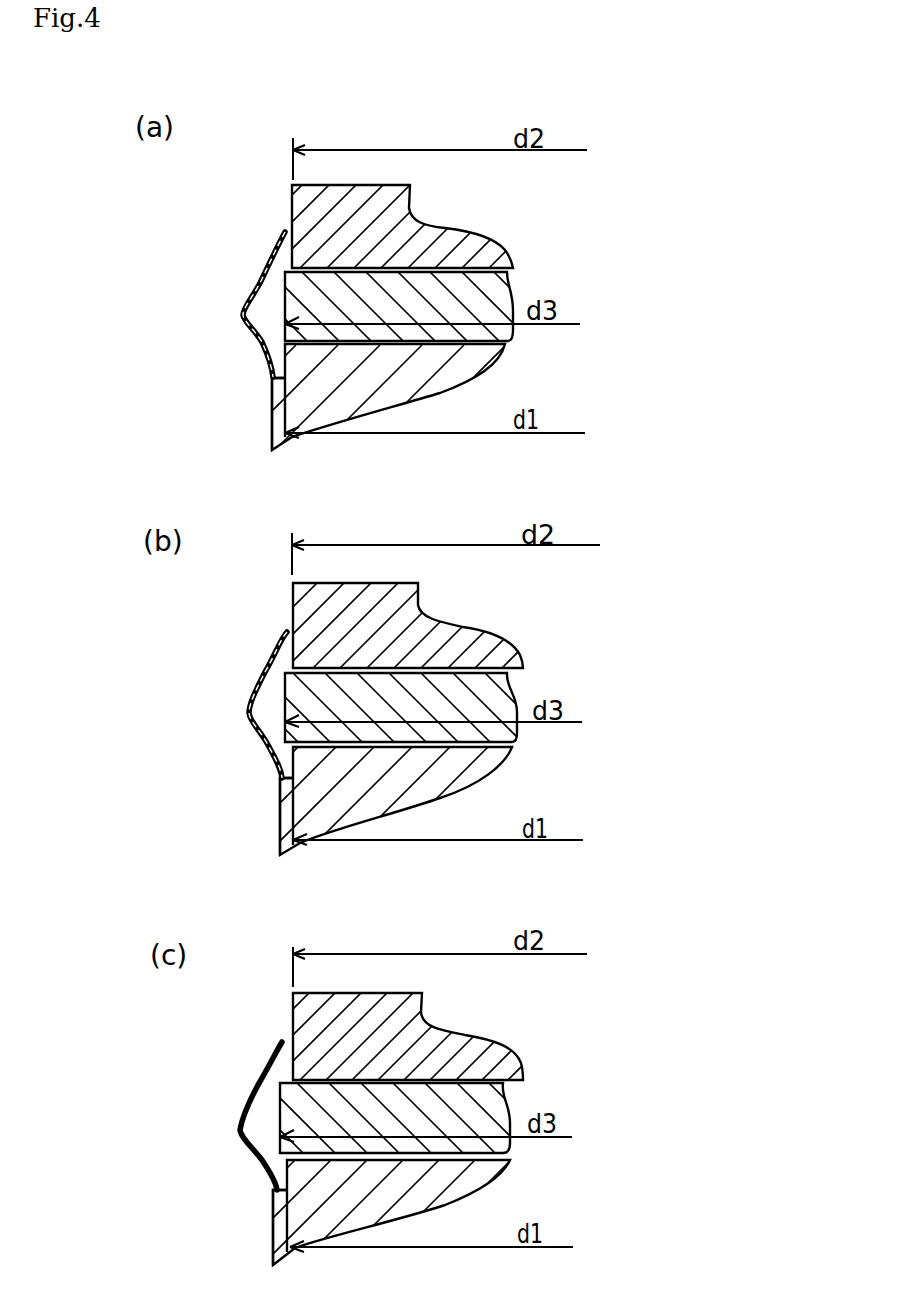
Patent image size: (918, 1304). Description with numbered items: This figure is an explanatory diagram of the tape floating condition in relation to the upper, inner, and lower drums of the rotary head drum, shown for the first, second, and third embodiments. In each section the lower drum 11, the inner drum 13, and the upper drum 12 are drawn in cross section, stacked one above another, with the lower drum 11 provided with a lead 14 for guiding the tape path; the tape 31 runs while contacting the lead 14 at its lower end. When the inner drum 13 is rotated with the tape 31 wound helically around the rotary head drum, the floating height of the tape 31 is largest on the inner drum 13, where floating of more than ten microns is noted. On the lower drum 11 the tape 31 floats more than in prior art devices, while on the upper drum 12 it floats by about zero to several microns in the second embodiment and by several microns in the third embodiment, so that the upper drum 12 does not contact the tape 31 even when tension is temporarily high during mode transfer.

The lower drum 11 is at (273, 1228).
The upper drum 12 is at (292, 1015).
The inner drum 13 is at (500, 1108).
The lead 14 is at (277, 1190).
The tape 31 is at (257, 1088).